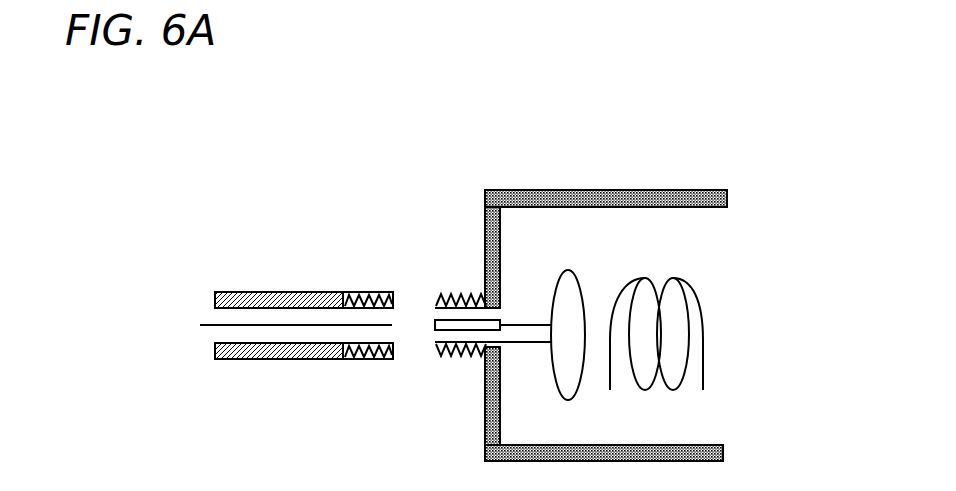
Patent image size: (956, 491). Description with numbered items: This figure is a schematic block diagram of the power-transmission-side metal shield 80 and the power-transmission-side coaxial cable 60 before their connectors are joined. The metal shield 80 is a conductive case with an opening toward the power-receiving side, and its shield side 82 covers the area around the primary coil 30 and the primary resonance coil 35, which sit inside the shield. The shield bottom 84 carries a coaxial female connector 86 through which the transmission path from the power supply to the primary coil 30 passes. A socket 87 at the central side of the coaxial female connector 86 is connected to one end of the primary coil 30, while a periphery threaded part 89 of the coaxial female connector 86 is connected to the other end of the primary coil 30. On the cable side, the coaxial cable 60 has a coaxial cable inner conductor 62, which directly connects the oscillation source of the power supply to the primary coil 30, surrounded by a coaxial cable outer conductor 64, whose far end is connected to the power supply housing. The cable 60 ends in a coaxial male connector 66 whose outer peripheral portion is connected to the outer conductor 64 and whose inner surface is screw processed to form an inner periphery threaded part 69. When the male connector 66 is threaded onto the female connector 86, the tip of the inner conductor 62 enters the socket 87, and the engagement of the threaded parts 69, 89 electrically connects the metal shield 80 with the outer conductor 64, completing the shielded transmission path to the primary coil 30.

The power-transmission-side coaxial cable 60 is at (343, 249).
The coaxial cable inner conductor 62 is at (222, 323).
The coaxial cable outer conductor 64 is at (273, 292).
The coaxial male connector 66 is at (350, 360).
The inner periphery threaded part 69 is at (383, 305).
The power-transmission-side metal shield 80 is at (733, 163).
The shield side 82 is at (605, 191).
The shield bottom 84 is at (483, 218).
The coaxial female connector 86 is at (435, 343).
The socket 87 is at (435, 318).
The periphery threaded part 89 is at (470, 356).
The primary coil 30 is at (563, 270).
The primary resonance coil 35 is at (655, 280).